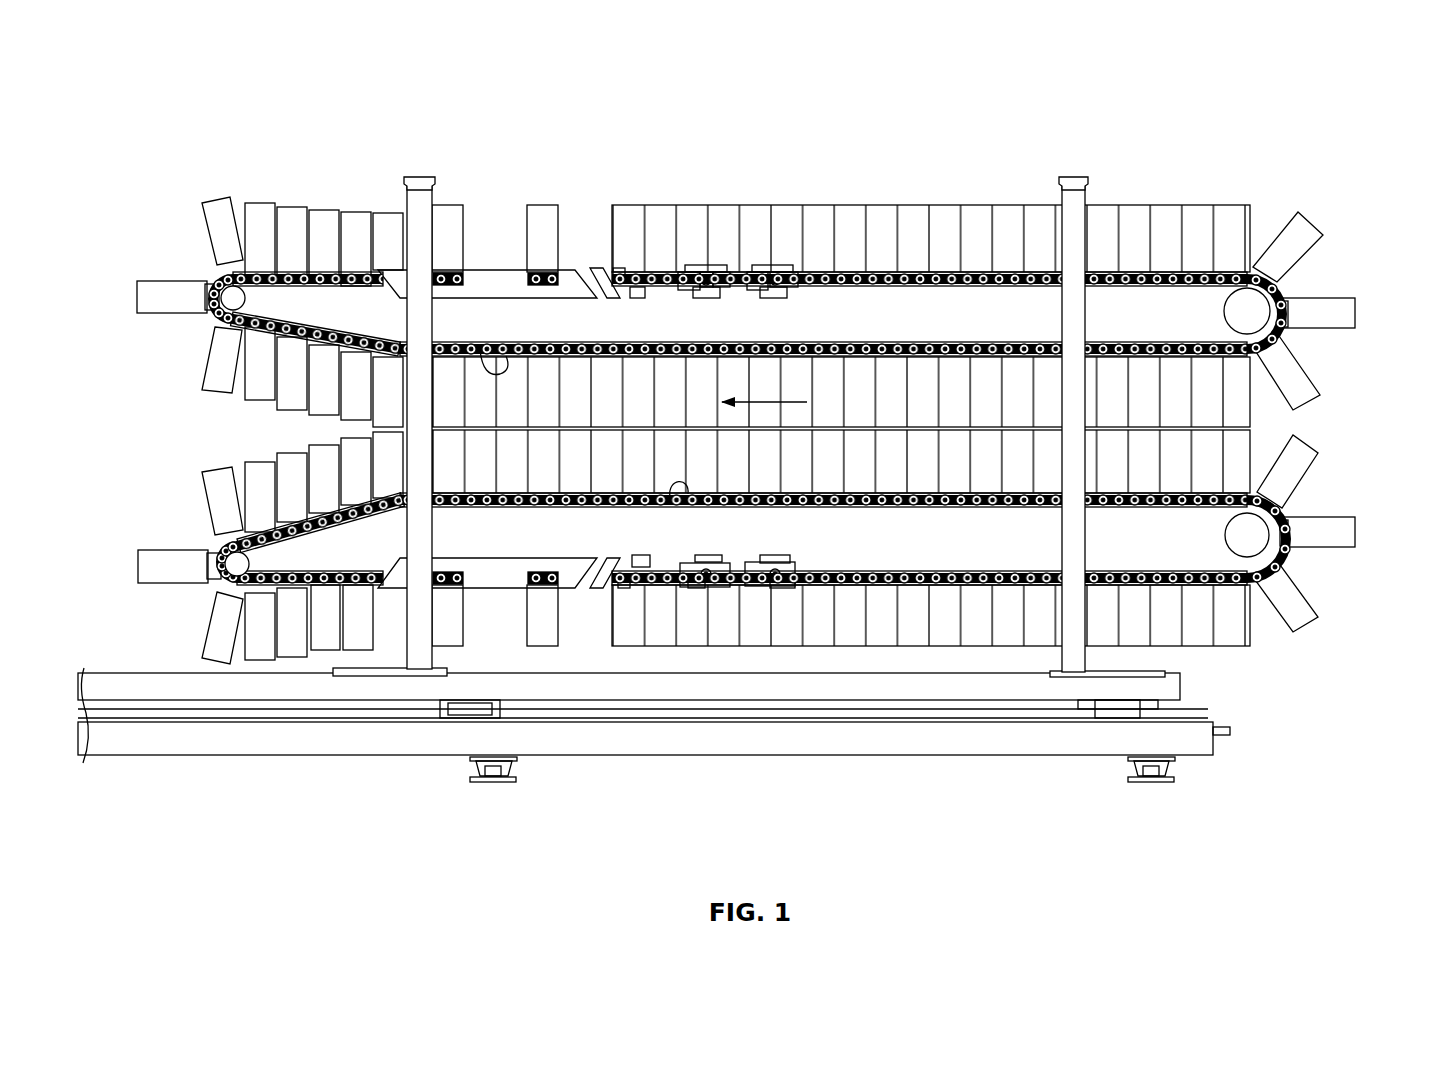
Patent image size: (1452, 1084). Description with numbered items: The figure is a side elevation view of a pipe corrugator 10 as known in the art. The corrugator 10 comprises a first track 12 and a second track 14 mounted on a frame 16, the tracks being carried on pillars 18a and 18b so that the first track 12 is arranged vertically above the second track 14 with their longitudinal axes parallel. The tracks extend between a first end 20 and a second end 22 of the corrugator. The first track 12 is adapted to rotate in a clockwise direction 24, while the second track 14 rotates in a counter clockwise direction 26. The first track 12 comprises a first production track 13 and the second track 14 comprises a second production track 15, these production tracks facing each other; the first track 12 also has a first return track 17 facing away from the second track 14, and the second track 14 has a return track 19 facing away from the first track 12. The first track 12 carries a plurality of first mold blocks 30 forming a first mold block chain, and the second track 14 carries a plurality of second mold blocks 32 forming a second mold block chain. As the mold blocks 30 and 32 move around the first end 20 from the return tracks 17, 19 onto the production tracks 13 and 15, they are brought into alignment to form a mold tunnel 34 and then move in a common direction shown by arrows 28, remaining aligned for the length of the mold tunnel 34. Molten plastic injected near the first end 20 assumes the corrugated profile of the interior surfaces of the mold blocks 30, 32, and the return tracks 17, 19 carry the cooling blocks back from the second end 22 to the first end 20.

The corrugator 10 is at (1302, 110).
The first track 12 is at (1256, 272).
The first production track 13 is at (480, 350).
The second track 14 is at (1250, 578).
The second production track 15 is at (675, 505).
The frame 16 is at (135, 762).
The first return track 17 is at (610, 275).
The pillar 18a is at (420, 177).
The pillar 18b is at (1072, 177).
The return track 19 is at (850, 590).
The first end 20 is at (1345, 425).
The second end 22 is at (168, 430).
The clockwise direction 24 is at (793, 162).
The counter clockwise direction 26 is at (150, 657).
The arrows 28 is at (770, 400).
The first mold blocks 30 is at (215, 200).
The second mold blocks 32 is at (1101, 472).
The mold tunnel 34 is at (873, 406).